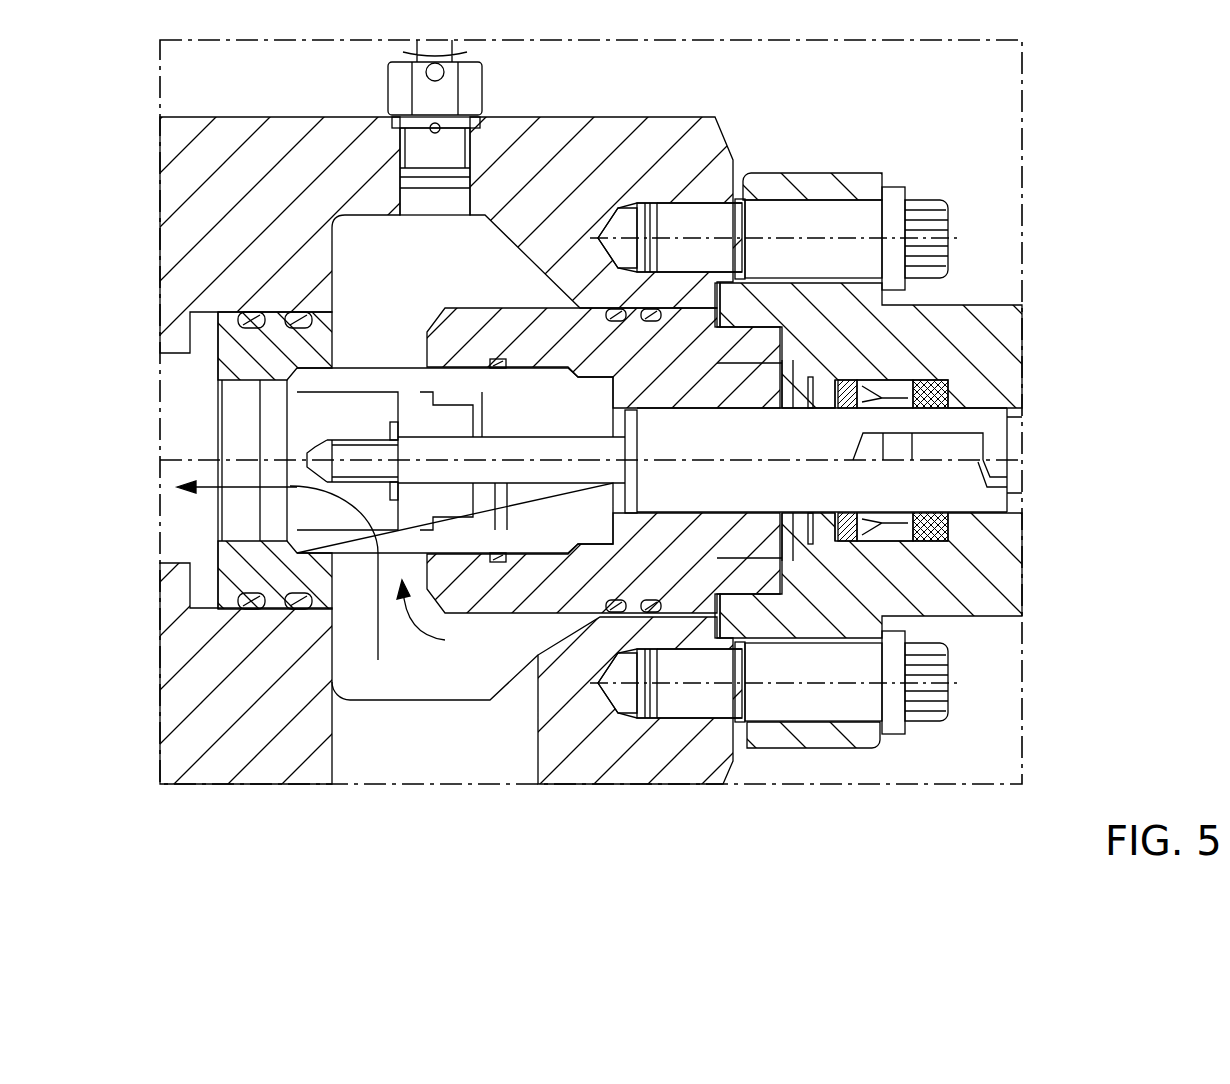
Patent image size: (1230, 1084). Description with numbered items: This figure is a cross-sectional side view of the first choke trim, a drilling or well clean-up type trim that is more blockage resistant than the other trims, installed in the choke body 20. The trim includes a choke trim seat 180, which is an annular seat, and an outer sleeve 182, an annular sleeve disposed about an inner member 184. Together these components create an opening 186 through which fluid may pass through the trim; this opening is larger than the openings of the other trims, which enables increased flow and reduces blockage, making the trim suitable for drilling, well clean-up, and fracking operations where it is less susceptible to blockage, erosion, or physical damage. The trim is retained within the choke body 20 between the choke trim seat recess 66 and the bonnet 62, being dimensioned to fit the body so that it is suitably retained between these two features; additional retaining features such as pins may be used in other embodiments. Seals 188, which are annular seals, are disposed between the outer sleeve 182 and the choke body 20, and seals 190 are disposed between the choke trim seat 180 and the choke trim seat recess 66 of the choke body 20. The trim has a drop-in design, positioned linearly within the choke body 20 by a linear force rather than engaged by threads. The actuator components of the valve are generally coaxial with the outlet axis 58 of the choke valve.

The choke body 20 is at (188, 178).
The outlet axis 58 is at (203, 462).
The bonnet 62 is at (1000, 337).
The choke trim seat recess 66 is at (190, 563).
The choke trim seat 180 is at (250, 568).
The outer sleeve 182 is at (474, 328).
The inner member 184 is at (582, 512).
The opening 186 is at (336, 570).
The seals 188 is at (650, 309).
The seals 190 is at (298, 312).